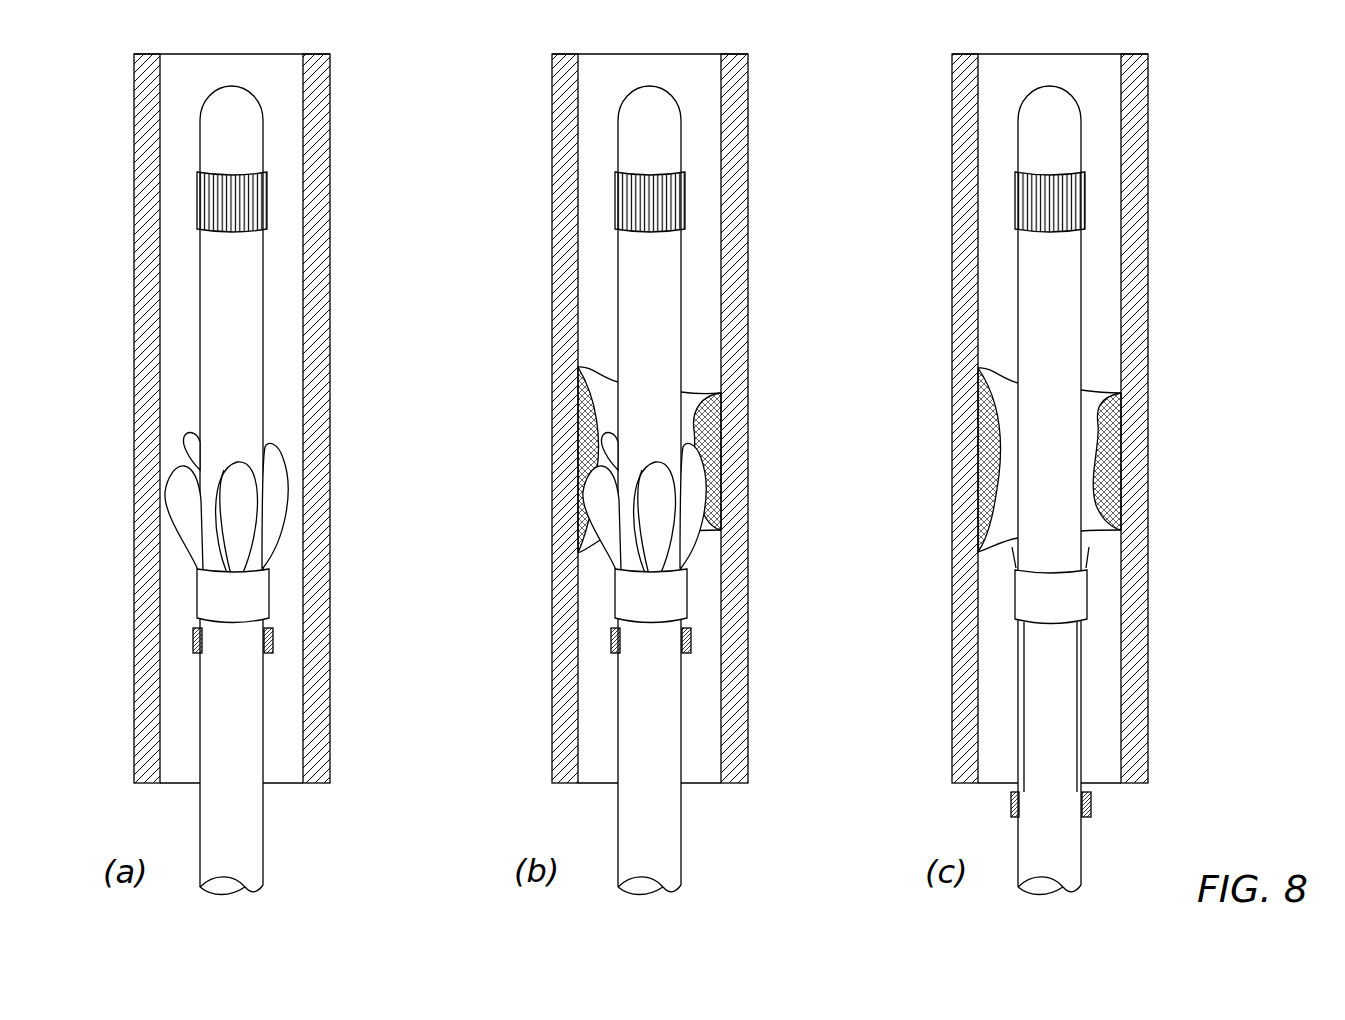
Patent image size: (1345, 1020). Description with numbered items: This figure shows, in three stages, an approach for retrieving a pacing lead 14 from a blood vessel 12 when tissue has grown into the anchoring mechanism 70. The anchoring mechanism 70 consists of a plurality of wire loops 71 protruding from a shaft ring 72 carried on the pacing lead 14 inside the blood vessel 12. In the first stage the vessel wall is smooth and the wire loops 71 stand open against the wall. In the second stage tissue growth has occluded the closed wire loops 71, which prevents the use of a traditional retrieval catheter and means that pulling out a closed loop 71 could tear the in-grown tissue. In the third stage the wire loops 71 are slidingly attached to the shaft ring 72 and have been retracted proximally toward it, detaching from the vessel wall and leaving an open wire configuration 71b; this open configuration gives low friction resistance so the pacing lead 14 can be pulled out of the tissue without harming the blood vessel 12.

The blood vessel 12 is at (330, 672).
The pacing lead 14 is at (264, 826).
The anchoring mechanism 70 is at (647, 592).
The wire loops 71 is at (287, 456).
The open wire configuration 71b is at (1090, 559).
The shaft ring 72 is at (270, 590).